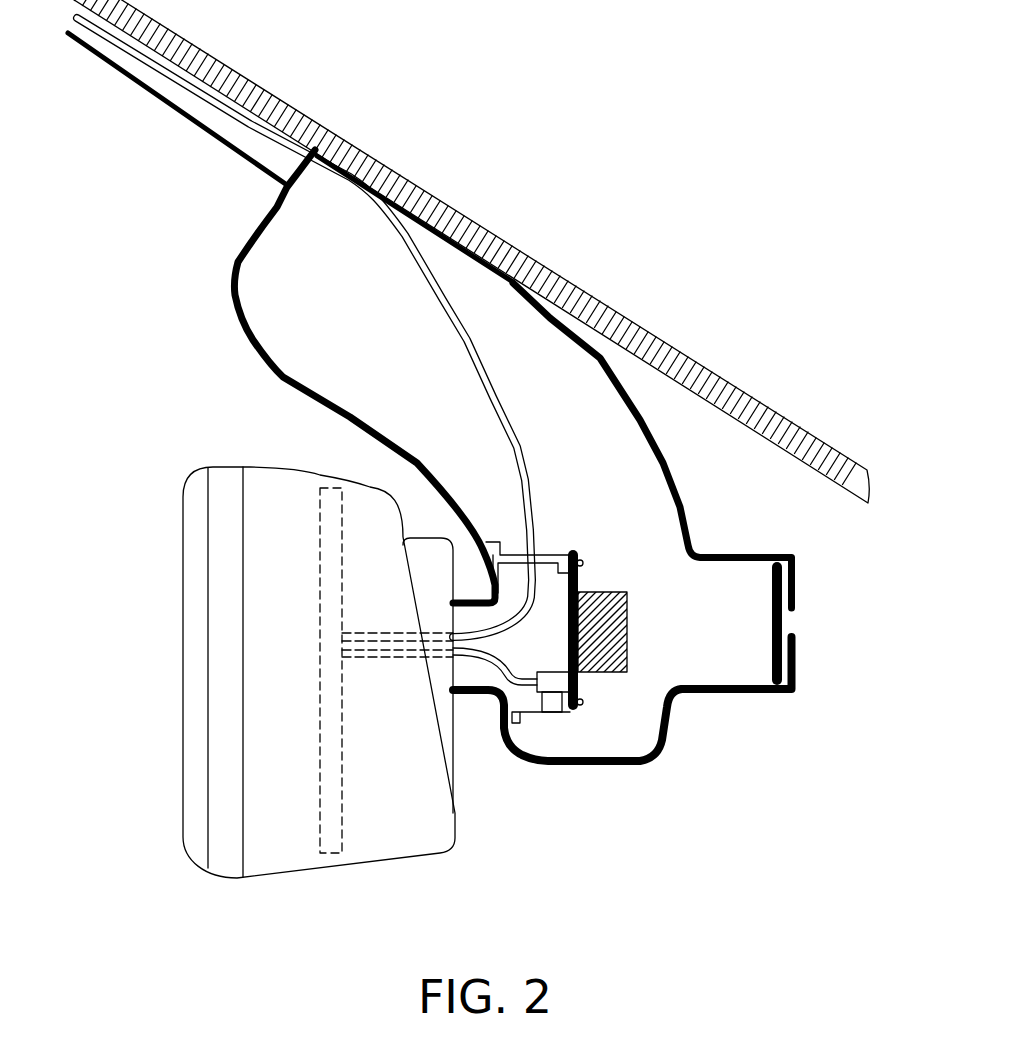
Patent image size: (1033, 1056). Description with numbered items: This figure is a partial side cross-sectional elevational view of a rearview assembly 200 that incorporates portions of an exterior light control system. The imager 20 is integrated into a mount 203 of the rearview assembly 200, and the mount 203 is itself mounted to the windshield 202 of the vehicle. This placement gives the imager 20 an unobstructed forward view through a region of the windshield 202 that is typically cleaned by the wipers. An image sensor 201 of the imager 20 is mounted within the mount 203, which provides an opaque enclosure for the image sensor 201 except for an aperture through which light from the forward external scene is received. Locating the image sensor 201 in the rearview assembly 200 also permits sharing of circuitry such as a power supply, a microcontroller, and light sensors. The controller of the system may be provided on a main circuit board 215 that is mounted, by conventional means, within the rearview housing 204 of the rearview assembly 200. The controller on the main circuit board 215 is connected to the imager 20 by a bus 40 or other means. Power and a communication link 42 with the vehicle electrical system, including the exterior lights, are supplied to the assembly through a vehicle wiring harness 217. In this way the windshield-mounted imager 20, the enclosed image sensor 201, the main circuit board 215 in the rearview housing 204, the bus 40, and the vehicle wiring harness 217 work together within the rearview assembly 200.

The rearview assembly 200 is at (383, 712).
The windshield 202 is at (560, 252).
The mount 203 is at (281, 270).
The rearview housing 204 is at (183, 757).
The main circuit board 215 is at (343, 790).
The vehicle wiring harness 217 is at (494, 413).
The communication link 42 is at (518, 477).
The bus 40 is at (480, 693).
The image sensor 201 is at (568, 628).
The imager 20 is at (622, 690).